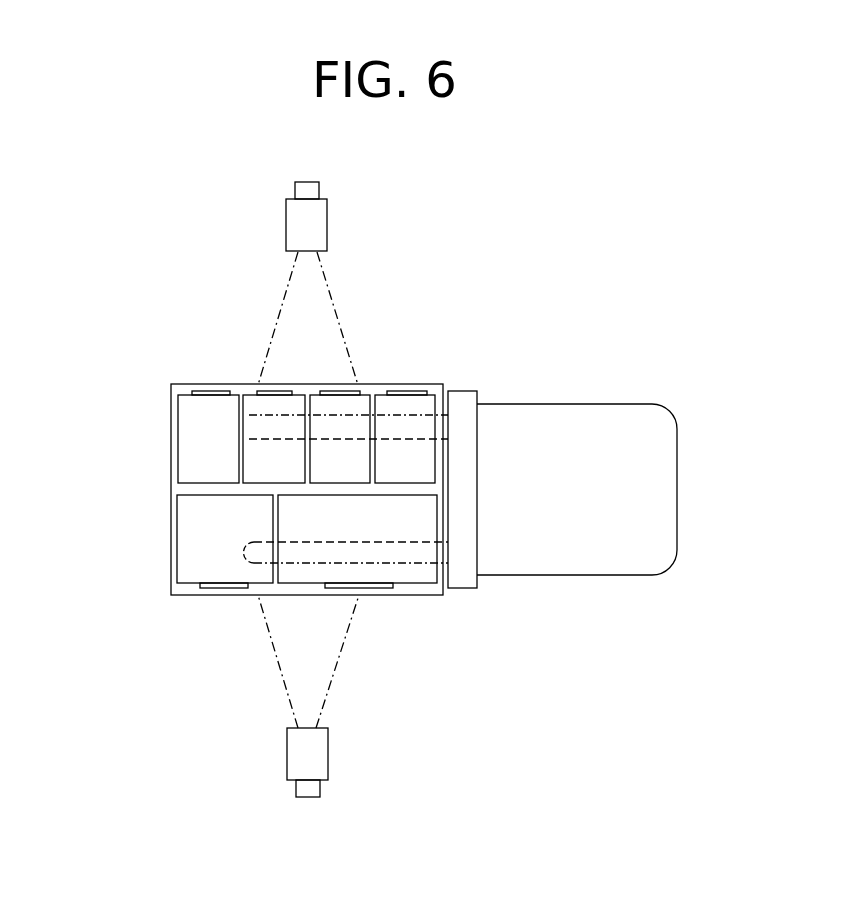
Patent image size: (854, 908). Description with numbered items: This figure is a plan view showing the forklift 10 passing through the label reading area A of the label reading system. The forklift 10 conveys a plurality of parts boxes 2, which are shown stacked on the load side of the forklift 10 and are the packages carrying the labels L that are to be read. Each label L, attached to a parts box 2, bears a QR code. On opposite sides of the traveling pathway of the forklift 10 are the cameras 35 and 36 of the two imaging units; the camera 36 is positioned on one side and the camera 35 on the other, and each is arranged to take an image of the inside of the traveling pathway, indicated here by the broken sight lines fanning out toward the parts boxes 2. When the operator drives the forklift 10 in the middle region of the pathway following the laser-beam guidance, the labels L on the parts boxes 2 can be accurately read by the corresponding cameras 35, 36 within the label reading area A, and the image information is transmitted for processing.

The sensor unit S is at (157, 443).
The label L is at (210, 386).
The parts box 2 is at (278, 386).
The forklift 10 is at (572, 392).
The camera 36 is at (314, 216).
The camera 35 is at (314, 756).
The label reading area A is at (260, 280).